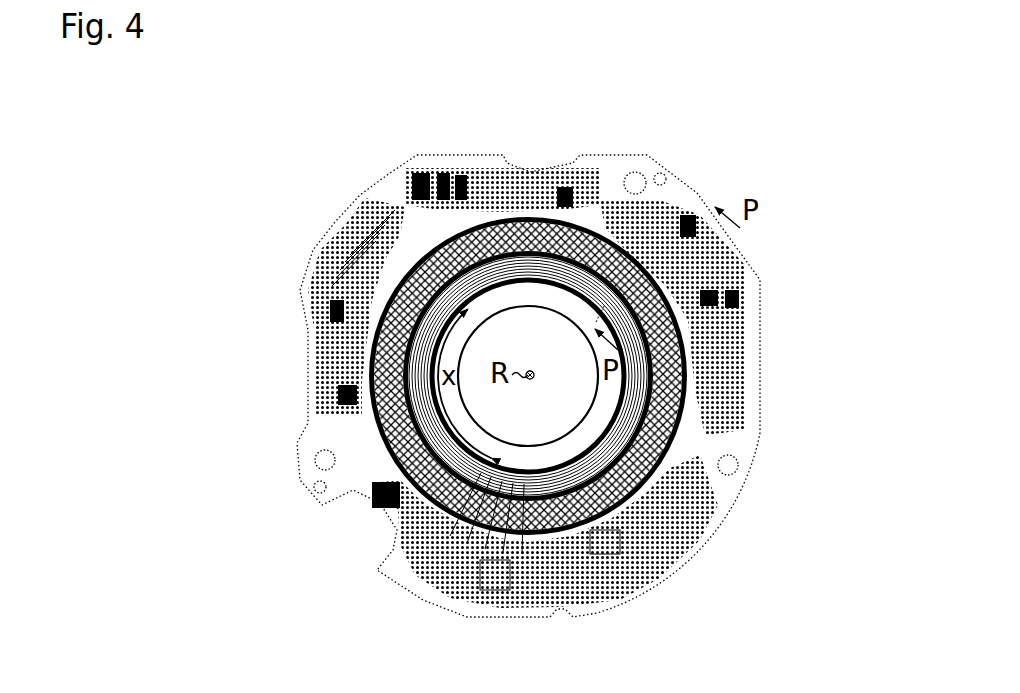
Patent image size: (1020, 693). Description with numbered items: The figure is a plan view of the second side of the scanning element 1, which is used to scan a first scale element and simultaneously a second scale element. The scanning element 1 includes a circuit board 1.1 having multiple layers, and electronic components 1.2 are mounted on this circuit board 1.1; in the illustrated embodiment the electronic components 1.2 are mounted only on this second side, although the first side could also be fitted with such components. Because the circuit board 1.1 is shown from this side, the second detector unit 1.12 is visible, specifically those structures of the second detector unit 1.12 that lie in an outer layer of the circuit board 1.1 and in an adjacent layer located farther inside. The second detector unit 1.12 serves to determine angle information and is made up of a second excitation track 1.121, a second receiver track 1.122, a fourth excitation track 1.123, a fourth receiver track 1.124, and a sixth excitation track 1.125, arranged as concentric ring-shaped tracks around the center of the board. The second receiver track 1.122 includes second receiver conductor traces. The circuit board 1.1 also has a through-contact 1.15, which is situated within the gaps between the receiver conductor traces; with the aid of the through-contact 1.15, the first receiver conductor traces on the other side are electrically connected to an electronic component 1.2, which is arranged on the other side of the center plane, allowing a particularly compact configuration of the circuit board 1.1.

The scanning element 1 is at (343, 183).
The circuit board 1.1 is at (328, 260).
The electronic components 1.2 is at (417, 174).
The second detector unit 1.12 is at (370, 351).
The second excitation track 1.121 is at (378, 398).
The second receiver track 1.122 is at (659, 352).
The fourth excitation track 1.123 is at (415, 432).
The fourth receiver track 1.124 is at (640, 400).
The sixth excitation track 1.125 is at (453, 443).
The through-contact 1.15 is at (538, 512).